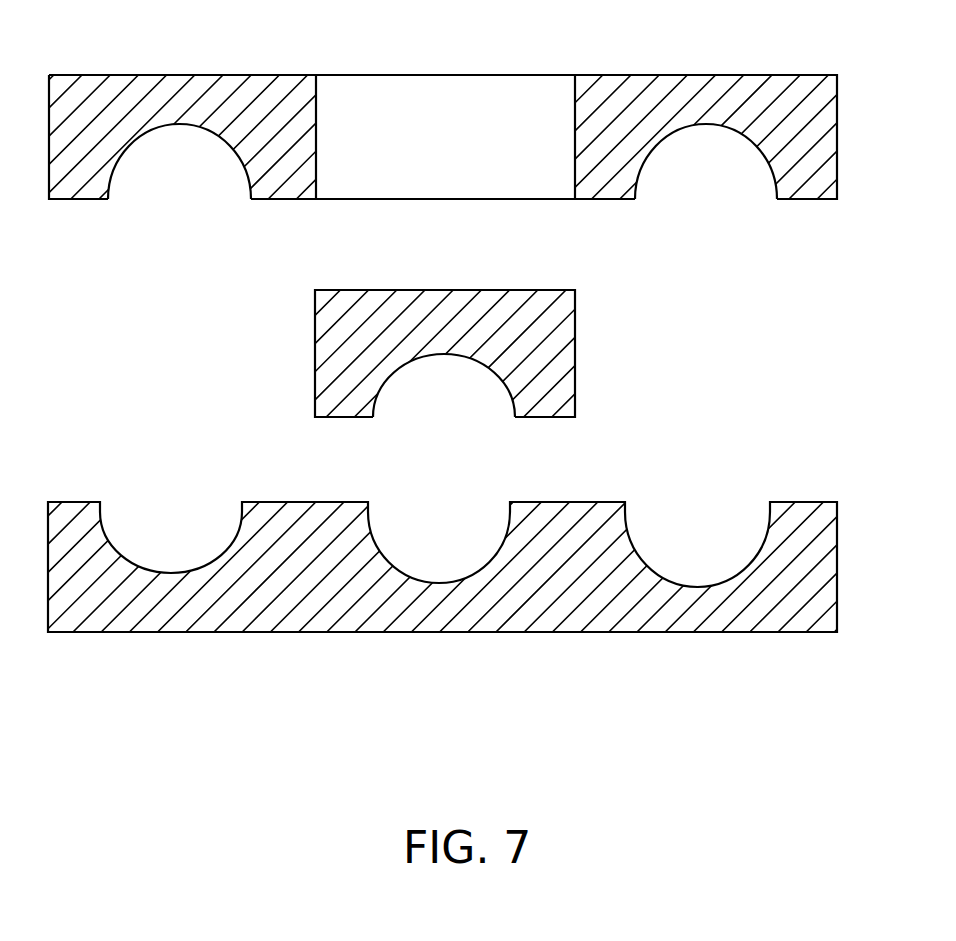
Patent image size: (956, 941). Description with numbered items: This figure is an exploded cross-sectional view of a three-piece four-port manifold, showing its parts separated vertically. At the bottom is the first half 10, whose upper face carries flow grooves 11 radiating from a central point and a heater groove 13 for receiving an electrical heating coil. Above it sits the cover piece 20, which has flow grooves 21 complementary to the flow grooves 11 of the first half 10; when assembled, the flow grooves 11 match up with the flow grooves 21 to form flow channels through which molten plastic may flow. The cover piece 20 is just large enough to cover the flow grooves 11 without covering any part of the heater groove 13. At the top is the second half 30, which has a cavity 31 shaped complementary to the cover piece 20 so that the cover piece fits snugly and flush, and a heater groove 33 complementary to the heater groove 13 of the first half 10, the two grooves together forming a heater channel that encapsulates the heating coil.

The first half 10 is at (745, 622).
The flow grooves 11 is at (443, 557).
The heater groove 13 is at (173, 553).
The cover piece 20 is at (555, 320).
The flow grooves 21 is at (442, 382).
The second half 30 is at (642, 82).
The cavity 31 is at (428, 103).
The heater groove 33 is at (182, 158).